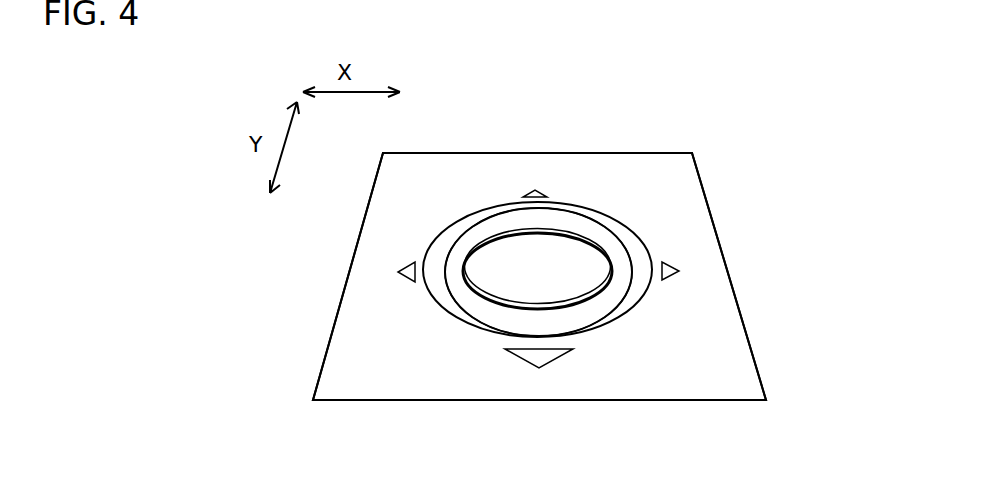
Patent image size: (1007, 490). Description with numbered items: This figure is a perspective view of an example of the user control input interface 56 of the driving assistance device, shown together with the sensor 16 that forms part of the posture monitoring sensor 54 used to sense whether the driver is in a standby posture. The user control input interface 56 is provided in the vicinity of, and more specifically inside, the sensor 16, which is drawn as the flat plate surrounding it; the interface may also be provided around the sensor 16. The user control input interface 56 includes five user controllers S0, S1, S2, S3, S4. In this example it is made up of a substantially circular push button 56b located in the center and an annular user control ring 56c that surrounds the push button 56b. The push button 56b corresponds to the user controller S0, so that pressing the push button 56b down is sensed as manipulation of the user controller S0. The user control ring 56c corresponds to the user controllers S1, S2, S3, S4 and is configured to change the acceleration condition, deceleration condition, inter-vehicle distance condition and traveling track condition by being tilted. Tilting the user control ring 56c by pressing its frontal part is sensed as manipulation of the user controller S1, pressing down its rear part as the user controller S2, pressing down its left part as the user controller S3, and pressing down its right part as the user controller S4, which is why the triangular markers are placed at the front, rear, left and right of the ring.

The posture monitoring sensor 54 is at (673, 183).
The sensor 16 is at (685, 232).
The user control input interface 56 is at (536, 276).
The push button 56b is at (562, 283).
The user control ring 56c is at (482, 307).
The user controller S0 is at (539, 269).
The user controller S1 is at (534, 178).
The user controller S2 is at (539, 373).
The user controller S3 is at (388, 269).
The user controller S4 is at (688, 272).